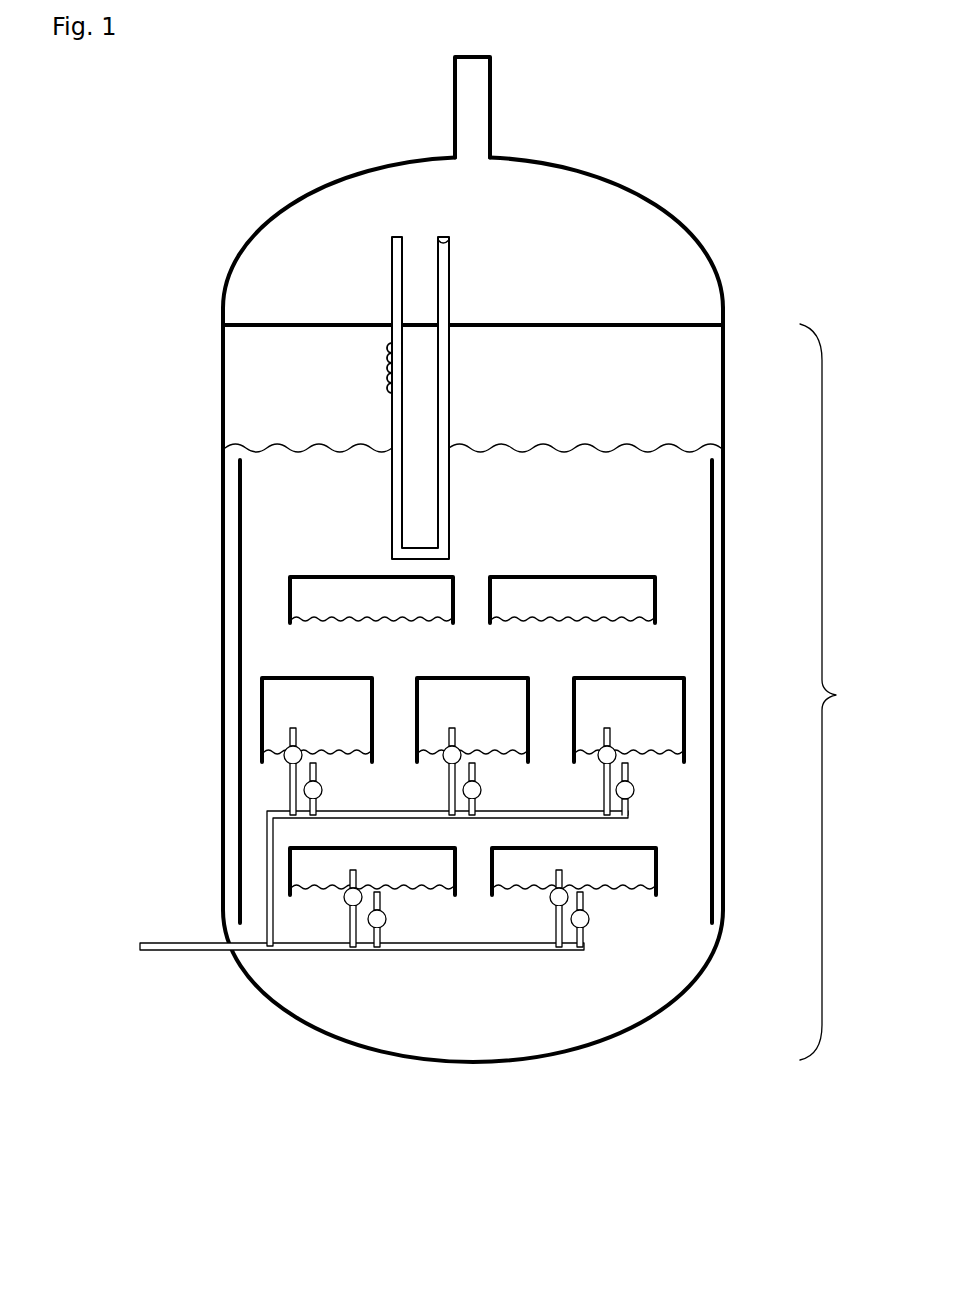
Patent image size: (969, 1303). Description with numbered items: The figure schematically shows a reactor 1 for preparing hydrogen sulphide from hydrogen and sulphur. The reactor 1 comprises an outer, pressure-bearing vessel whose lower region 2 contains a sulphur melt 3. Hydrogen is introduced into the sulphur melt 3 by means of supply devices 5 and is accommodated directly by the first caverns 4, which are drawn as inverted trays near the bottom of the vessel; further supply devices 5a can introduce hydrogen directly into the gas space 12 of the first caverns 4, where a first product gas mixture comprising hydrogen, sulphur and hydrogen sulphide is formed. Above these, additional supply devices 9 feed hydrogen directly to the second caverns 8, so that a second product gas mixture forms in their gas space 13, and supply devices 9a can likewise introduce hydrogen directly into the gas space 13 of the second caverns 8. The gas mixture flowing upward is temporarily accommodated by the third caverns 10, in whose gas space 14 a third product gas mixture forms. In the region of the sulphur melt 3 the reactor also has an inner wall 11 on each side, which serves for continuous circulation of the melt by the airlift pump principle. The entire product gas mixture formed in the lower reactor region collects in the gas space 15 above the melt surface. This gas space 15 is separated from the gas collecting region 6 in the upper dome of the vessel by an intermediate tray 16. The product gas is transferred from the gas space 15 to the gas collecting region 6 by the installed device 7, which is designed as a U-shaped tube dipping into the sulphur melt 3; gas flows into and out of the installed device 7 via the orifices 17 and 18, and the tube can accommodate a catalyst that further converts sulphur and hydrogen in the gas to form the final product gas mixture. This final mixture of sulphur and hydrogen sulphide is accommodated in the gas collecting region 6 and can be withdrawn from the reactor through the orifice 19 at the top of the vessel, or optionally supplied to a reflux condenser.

The reactor 1 is at (529, 619).
The lower region 2 is at (546, 684).
The sulphur melt 3 is at (462, 995).
The first caverns 4 is at (440, 848).
The supply devices 5 is at (381, 905).
The supply devices 5a is at (358, 878).
The gas collecting region 6 is at (565, 237).
The installed device 7 is at (452, 497).
The second caverns 8 is at (362, 678).
The supply devices 9 is at (318, 774).
The supply devices 9a is at (298, 736).
The third caverns 10 is at (292, 577).
The inner wall 11 is at (245, 490).
The gas space 12 is at (337, 871).
The gas space 13 is at (300, 703).
The gas space 14 is at (368, 595).
The gas space 15 is at (670, 412).
The intermediate tray 16 is at (333, 325).
The orifice 17 is at (392, 372).
The orifice 18 is at (443, 238).
The orifice 19 is at (493, 88).